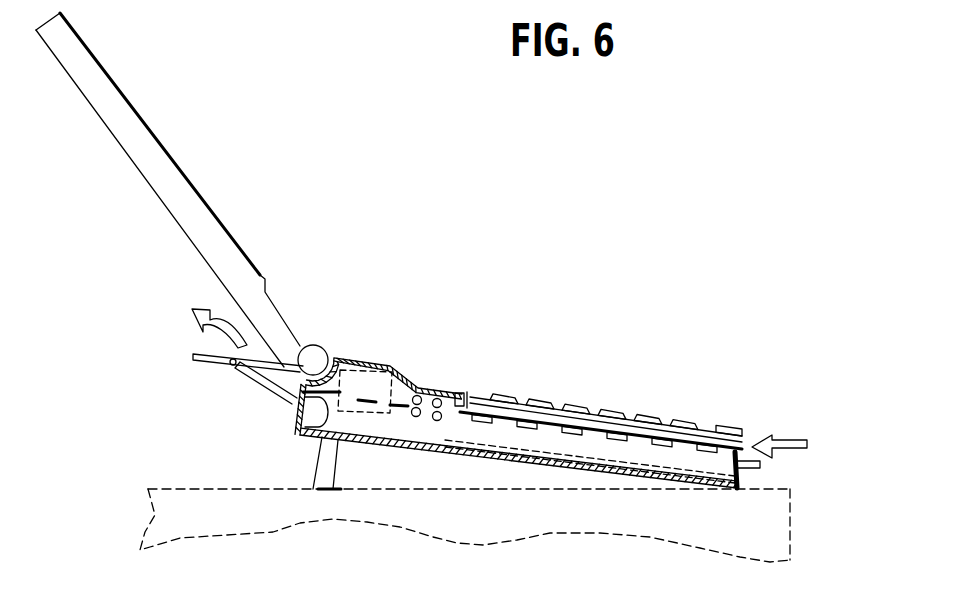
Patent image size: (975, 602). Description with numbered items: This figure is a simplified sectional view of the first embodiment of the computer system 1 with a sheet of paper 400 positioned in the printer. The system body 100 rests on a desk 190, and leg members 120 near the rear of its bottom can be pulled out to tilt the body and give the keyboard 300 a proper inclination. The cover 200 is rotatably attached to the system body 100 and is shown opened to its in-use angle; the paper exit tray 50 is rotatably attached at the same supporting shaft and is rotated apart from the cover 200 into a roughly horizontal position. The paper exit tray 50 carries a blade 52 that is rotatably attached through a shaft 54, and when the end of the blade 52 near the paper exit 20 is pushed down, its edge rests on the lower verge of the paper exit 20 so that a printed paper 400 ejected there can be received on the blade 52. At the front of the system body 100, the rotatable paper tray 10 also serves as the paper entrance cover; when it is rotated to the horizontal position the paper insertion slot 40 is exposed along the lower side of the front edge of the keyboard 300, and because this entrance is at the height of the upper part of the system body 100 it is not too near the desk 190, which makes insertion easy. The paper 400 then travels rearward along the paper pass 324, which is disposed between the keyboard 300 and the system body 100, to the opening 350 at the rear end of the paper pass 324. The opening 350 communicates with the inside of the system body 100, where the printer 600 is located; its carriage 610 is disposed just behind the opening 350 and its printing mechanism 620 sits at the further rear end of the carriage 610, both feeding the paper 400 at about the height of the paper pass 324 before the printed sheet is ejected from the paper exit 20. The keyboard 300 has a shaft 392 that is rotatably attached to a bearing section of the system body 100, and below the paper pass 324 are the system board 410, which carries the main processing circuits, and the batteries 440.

The computer system 1 is at (374, 226).
The paper tray 10 is at (760, 465).
The paper exit 20 is at (308, 437).
The paper insertion slot 40 is at (741, 446).
The paper exit tray 50 is at (233, 362).
The blade 52 is at (262, 378).
The shaft 54 is at (232, 365).
The system body 100 is at (404, 452).
The leg members 120 is at (323, 480).
The desk 190 is at (150, 509).
The cover 200 is at (163, 165).
The keyboard 300 is at (660, 410).
The paper pass 324 is at (728, 428).
The opening 350 is at (447, 393).
The shaft 392 is at (471, 395).
The paper 400 is at (562, 420).
The system board 410 is at (478, 456).
The batteries 440 is at (650, 462).
The printer 600 is at (430, 240).
The carriage 610 is at (417, 393).
The printing mechanism 620 is at (353, 377).